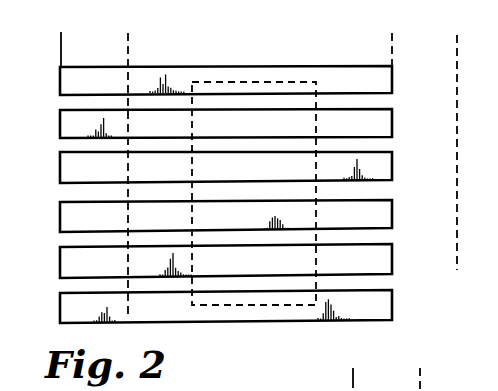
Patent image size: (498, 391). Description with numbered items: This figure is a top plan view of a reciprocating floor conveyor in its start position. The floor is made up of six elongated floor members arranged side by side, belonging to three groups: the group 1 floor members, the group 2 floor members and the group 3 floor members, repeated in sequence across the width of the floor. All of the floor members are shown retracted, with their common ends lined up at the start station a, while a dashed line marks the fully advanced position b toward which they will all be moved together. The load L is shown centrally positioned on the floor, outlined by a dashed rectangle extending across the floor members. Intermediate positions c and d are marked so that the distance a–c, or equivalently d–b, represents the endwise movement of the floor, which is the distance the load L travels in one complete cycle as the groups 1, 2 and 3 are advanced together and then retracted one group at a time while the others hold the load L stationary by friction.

The group 1 floor members 1 is at (226, 149).
The group 2 floor members 2 is at (226, 193).
The group 3 floor members 3 is at (226, 237).
The start station a is at (207, 198).
The fully advanced position b is at (457, 141).
The position c is at (273, 199).
The position d is at (392, 38).
The load L is at (262, 285).